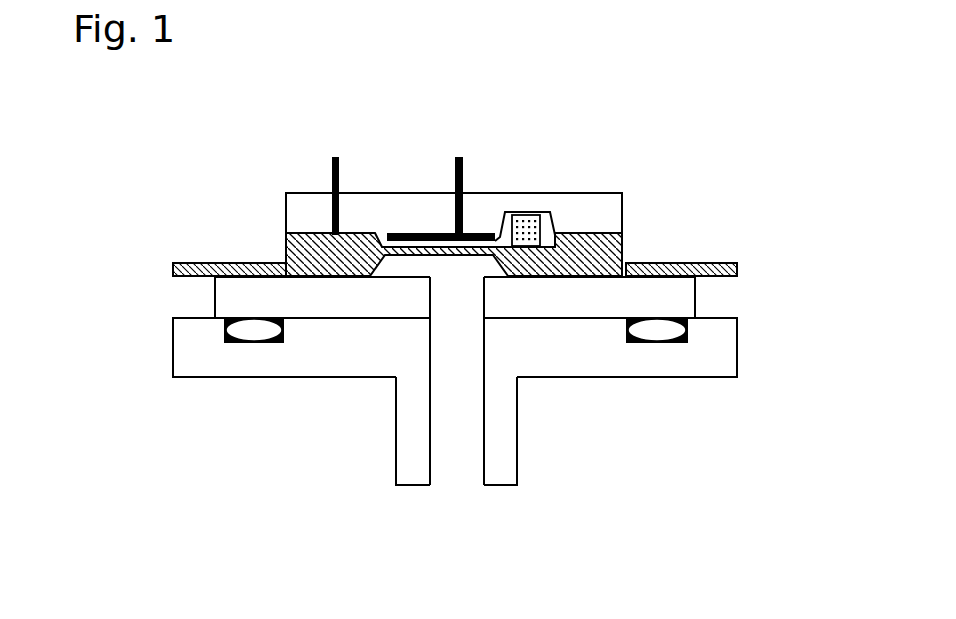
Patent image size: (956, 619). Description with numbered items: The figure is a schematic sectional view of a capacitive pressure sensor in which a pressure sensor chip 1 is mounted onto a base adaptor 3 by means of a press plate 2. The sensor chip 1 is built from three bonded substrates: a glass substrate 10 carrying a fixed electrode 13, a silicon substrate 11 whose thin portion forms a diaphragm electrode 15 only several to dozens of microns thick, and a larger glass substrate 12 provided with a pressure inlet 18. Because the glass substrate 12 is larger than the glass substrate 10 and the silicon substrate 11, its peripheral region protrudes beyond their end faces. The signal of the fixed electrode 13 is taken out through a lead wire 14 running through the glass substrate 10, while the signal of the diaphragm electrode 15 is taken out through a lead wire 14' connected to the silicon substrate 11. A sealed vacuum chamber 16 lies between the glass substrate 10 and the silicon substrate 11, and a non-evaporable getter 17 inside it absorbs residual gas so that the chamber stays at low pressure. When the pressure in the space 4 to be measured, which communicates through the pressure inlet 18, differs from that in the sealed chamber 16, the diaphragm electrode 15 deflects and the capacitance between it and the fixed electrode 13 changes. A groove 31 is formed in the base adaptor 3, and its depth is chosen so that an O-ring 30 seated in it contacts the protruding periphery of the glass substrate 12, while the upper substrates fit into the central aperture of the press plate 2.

The pressure sensor chip 1 is at (800, 225).
The press plate 2 is at (247, 262).
The base adaptor 3 is at (387, 390).
The space to be measured 4 is at (450, 463).
The glass substrate (first substrate) 10 is at (613, 210).
The silicon substrate (second substrate) 11 is at (632, 303).
The glass substrate (third substrate) 12 is at (688, 260).
The fixed electrode 13 is at (403, 232).
The lead wire 14 is at (496, 150).
The lead wire 14' is at (377, 144).
The diaphragm electrode 15 is at (387, 268).
The sealed (vacuum) chamber 16 is at (502, 238).
The non-evaporable getter 17 is at (542, 213).
The pressure inlet 18 is at (447, 305).
The O-ring 30 is at (657, 332).
The groove 31 is at (685, 345).